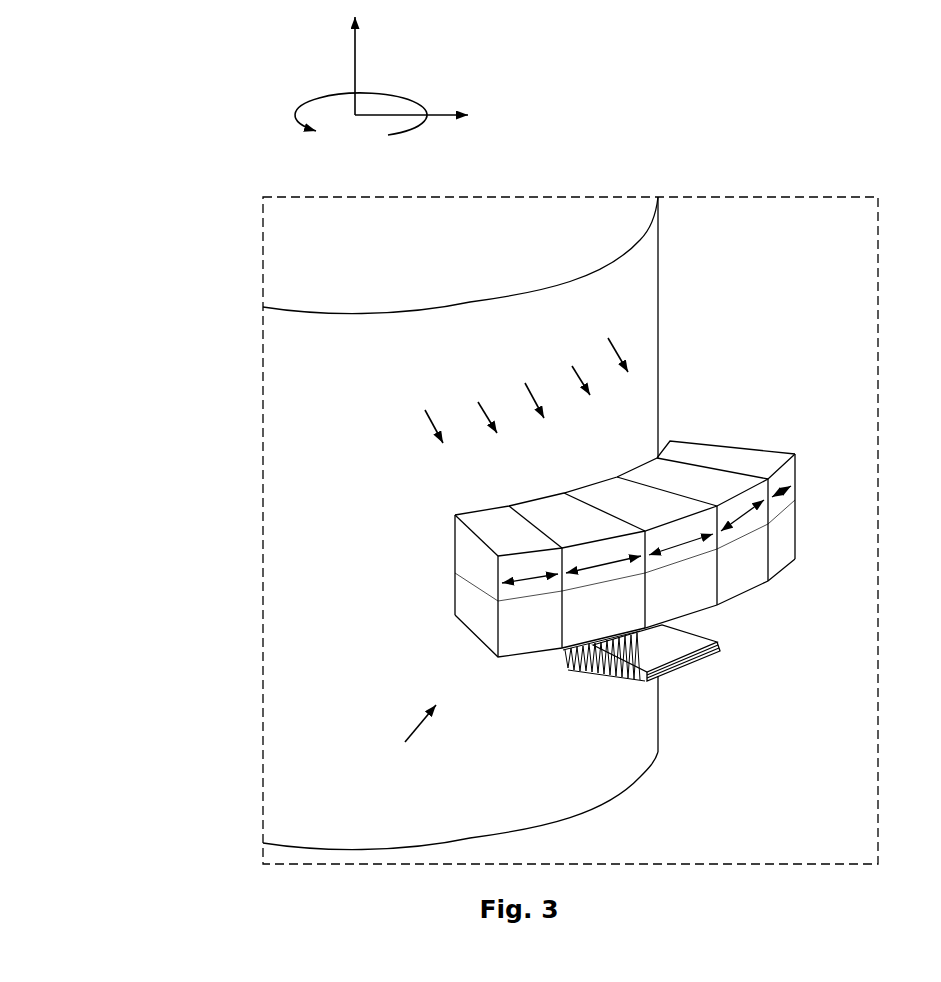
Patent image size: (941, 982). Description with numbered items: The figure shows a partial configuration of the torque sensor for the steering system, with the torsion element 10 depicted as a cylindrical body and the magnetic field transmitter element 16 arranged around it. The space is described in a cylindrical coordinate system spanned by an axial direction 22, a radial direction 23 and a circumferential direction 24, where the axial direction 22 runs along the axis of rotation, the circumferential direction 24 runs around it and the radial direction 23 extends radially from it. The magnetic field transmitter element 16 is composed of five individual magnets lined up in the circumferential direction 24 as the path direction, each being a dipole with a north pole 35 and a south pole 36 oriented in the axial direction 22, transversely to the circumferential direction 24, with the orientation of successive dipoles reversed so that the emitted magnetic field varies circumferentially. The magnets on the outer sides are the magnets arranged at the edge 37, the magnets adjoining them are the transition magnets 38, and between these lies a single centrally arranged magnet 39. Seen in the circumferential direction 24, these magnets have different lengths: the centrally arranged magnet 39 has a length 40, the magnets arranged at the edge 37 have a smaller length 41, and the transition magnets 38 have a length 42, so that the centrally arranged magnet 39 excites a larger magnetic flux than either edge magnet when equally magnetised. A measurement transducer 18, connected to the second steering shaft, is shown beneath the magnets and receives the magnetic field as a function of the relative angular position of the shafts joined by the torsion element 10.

The torsion element 10 is at (658, 266).
The magnetic field transmitter element 16 is at (401, 739).
The measurement transducer 18 is at (673, 667).
The axial direction 22 is at (358, 22).
The radial direction 23 is at (481, 114).
The circumferential direction 24 is at (297, 103).
The north pole 35 is at (558, 508).
The south pole 36 is at (492, 522).
The magnet arranged at the edge 37 is at (511, 374).
The transition magnet 38 is at (521, 382).
The centrally arranged magnet 39 is at (524, 384).
The length of the centrally arranged magnet 40 is at (690, 549).
The length of the magnets arranged at the edge 41 is at (540, 581).
The length of the transition magnets 42 is at (612, 571).